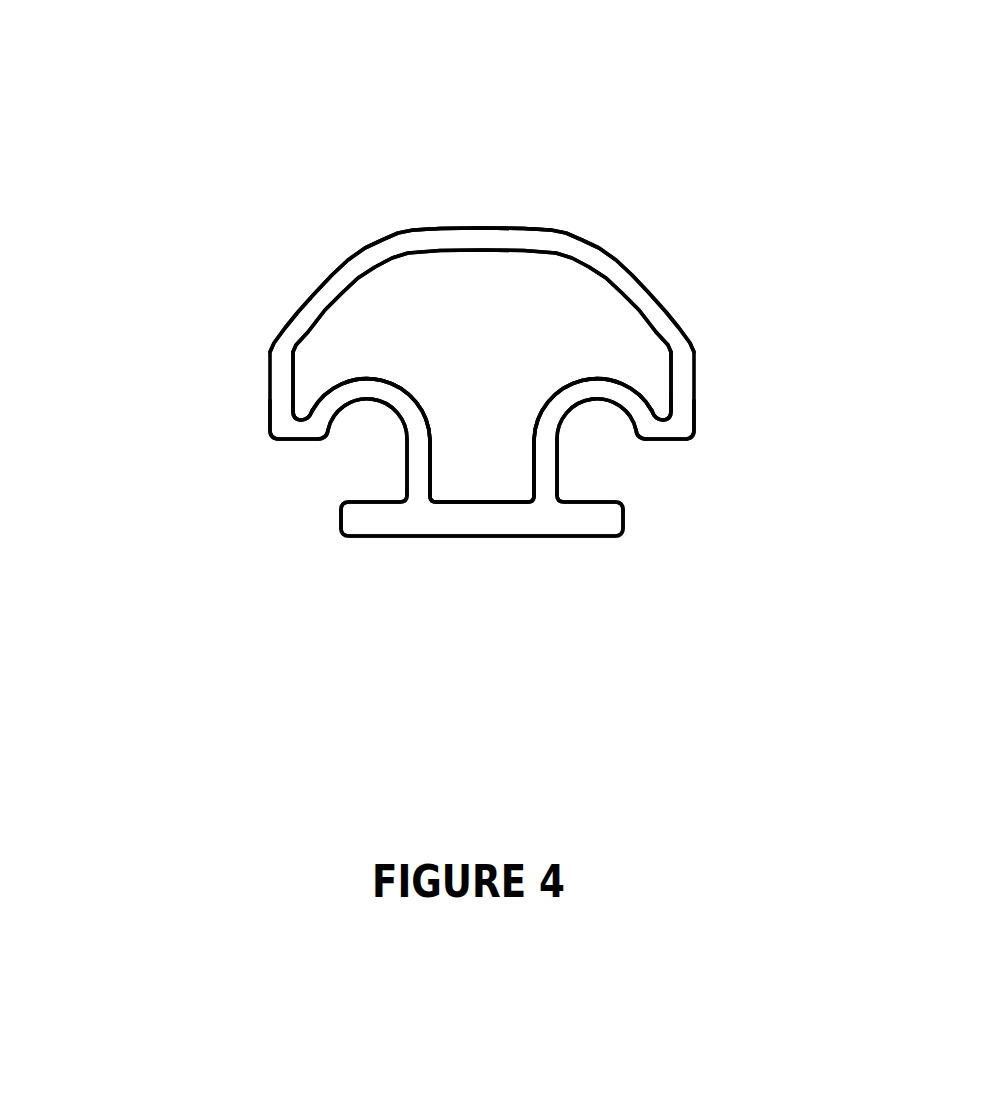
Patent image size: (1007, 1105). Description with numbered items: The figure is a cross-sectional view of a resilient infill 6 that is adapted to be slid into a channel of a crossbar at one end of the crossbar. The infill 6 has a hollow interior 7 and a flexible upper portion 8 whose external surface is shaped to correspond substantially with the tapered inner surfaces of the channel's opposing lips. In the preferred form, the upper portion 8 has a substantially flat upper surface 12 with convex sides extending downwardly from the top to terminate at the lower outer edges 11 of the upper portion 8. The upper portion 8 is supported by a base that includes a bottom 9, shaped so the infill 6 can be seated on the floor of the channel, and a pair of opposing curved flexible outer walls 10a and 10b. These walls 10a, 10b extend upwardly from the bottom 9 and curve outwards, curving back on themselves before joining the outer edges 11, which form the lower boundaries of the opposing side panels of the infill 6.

The resilient infill 6 is at (573, 167).
The hollow interior 7 is at (470, 405).
The upper portion 8 is at (610, 244).
The bottom 9 is at (477, 529).
The curved flexible outer wall 10a is at (399, 408).
The curved flexible outer wall 10b is at (561, 415).
The lower outer edges 11 is at (260, 448).
The upper surface 12 is at (455, 219).